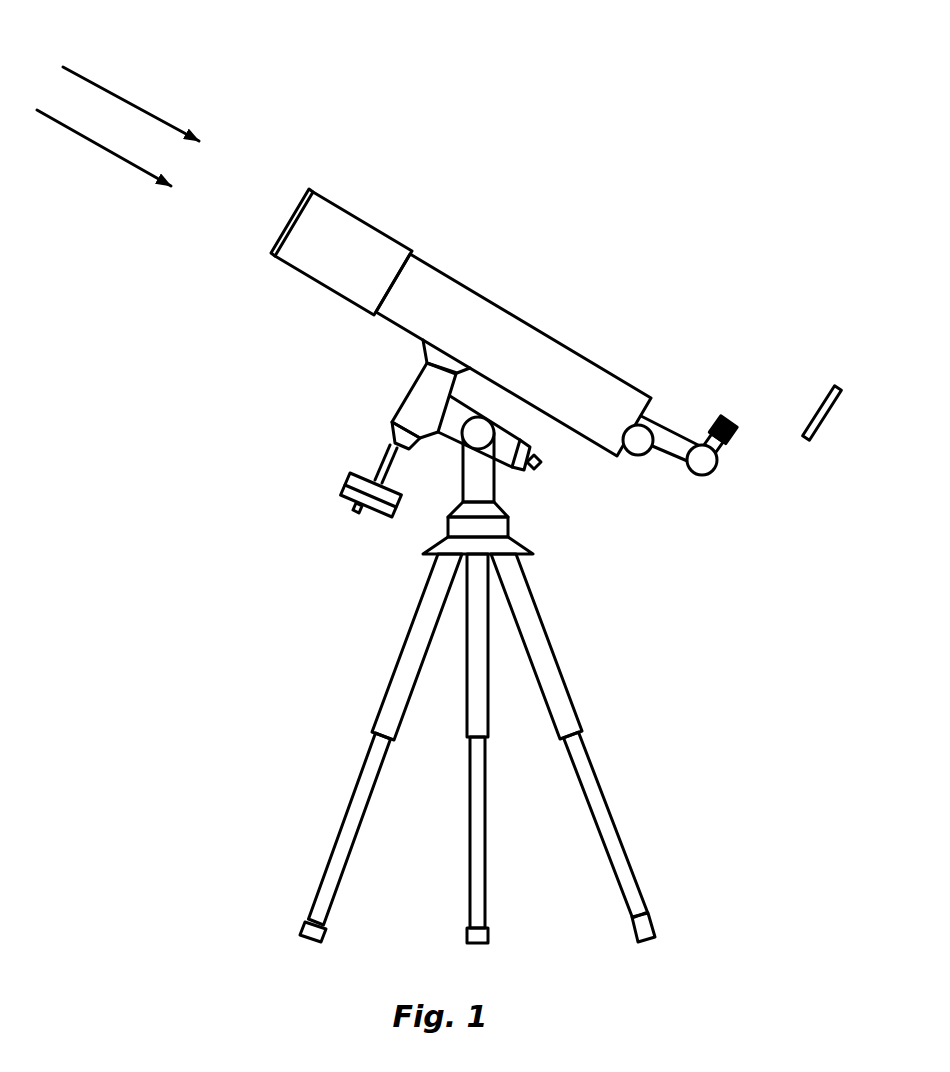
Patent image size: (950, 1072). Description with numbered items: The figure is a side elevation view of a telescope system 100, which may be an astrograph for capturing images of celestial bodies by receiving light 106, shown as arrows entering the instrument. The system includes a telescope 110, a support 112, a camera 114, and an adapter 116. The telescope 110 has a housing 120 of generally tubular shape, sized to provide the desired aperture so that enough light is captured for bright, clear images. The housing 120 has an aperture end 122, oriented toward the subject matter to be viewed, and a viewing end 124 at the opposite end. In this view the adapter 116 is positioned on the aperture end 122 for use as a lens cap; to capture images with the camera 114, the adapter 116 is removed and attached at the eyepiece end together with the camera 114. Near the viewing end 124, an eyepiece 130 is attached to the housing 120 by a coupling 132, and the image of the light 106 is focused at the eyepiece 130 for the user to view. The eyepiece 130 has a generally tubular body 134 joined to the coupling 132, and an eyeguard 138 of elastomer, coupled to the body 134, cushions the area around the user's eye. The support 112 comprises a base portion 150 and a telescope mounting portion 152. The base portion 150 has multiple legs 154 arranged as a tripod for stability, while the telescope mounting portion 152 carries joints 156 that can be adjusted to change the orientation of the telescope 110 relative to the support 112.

The telescope system 100 is at (458, 483).
The light 106 is at (120, 157).
The telescope 110 is at (506, 334).
The support 112 is at (598, 539).
The camera 114 is at (838, 386).
The adapter 116 is at (309, 212).
The housing 120 is at (505, 237).
The aperture end 122 is at (312, 258).
The viewing end 124 is at (628, 397).
The eyepiece 130 is at (747, 453).
The coupling 132 is at (662, 452).
The body 134 is at (723, 452).
The eyeguard 138 is at (722, 415).
The base portion 150 is at (470, 748).
The telescope mounting portion 152 is at (469, 450).
The legs 154 is at (357, 840).
The joints 156 is at (423, 400).